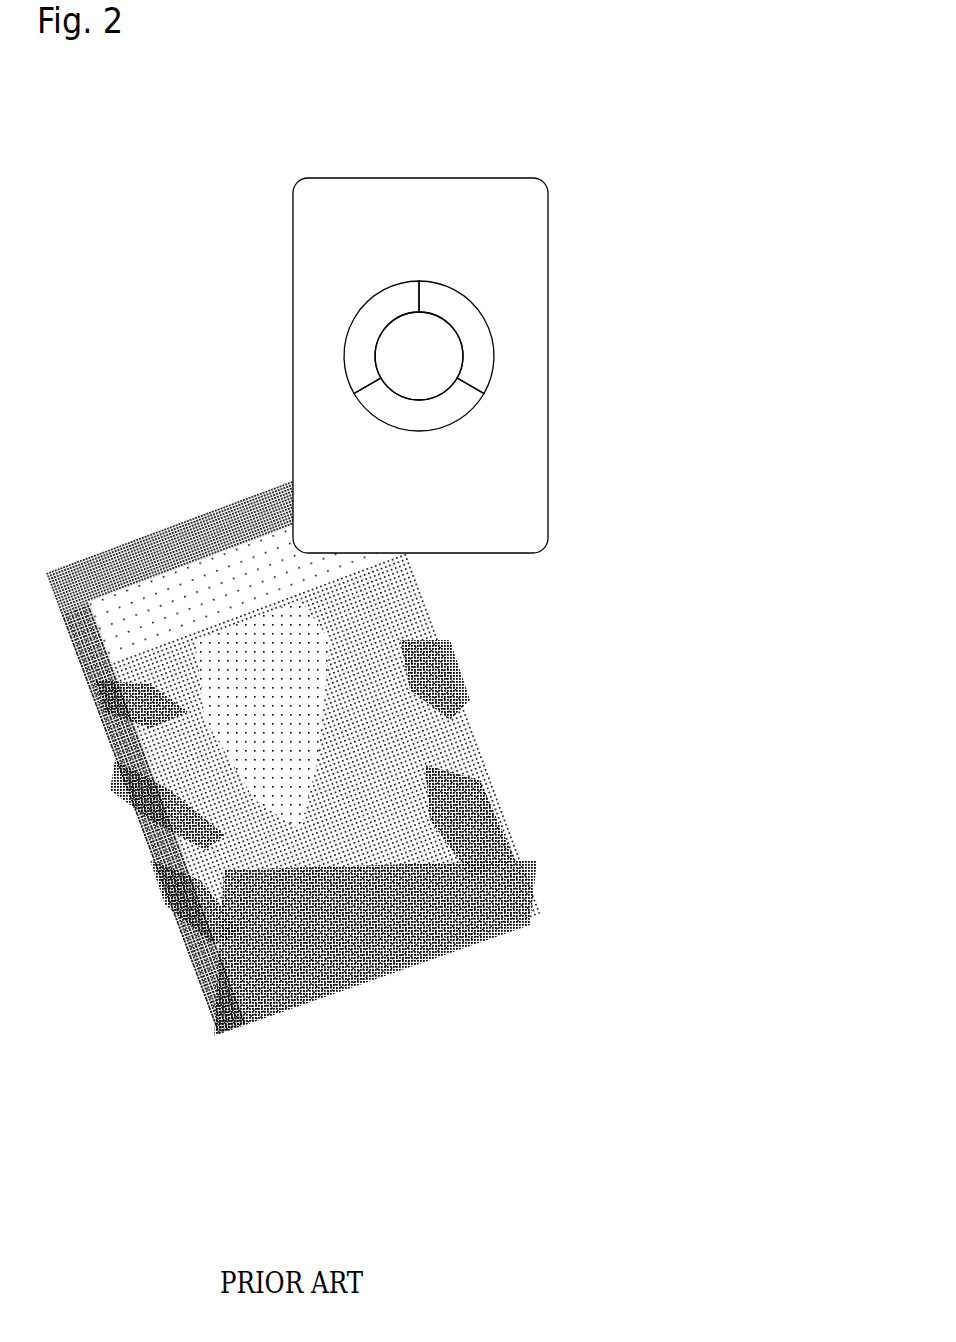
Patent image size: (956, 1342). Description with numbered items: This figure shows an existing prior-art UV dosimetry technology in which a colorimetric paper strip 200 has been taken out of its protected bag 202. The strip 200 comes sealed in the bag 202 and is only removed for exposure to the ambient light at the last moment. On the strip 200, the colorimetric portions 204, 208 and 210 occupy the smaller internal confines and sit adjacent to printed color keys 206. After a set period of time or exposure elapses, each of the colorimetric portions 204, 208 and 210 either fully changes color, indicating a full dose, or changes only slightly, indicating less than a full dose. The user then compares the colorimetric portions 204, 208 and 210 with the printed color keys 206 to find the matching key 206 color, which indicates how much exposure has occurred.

The colorimetric paper strip 200 is at (426, 295).
The protected bag 202 is at (450, 673).
The colorimetric portion 204 is at (360, 360).
The printed color key 206 is at (420, 340).
The colorimetric portion 208 is at (370, 407).
The colorimetric portion 210 is at (475, 360).